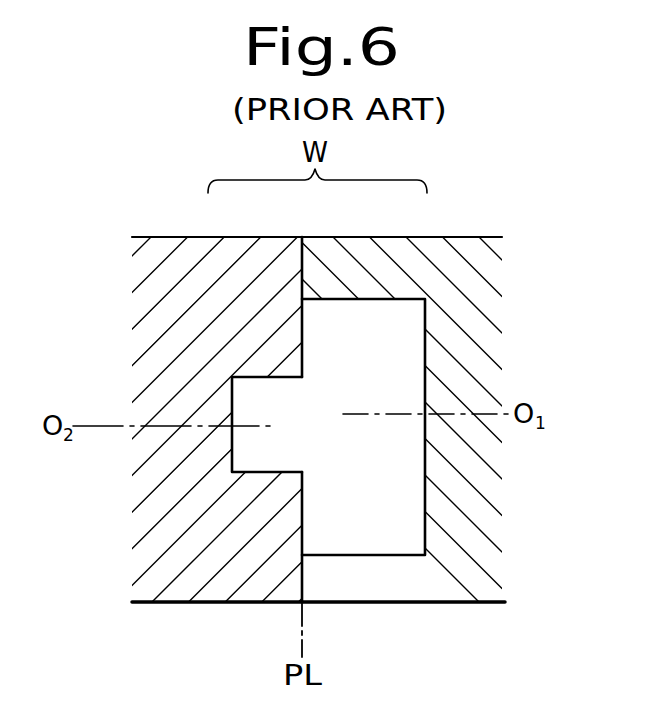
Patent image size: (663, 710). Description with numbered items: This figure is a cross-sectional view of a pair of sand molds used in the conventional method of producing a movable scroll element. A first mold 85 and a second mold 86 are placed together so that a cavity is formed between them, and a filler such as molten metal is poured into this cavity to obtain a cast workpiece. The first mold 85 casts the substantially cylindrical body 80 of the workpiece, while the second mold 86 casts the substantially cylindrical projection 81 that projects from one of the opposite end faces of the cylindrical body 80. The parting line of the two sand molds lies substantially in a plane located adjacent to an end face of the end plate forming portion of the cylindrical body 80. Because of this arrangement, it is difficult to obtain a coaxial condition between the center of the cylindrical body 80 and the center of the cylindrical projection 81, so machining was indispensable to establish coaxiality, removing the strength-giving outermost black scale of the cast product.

The cylindrical body 80 is at (400, 318).
The cylindrical projection 81 is at (262, 388).
The first mold 85 is at (460, 349).
The second mold 86 is at (145, 343).